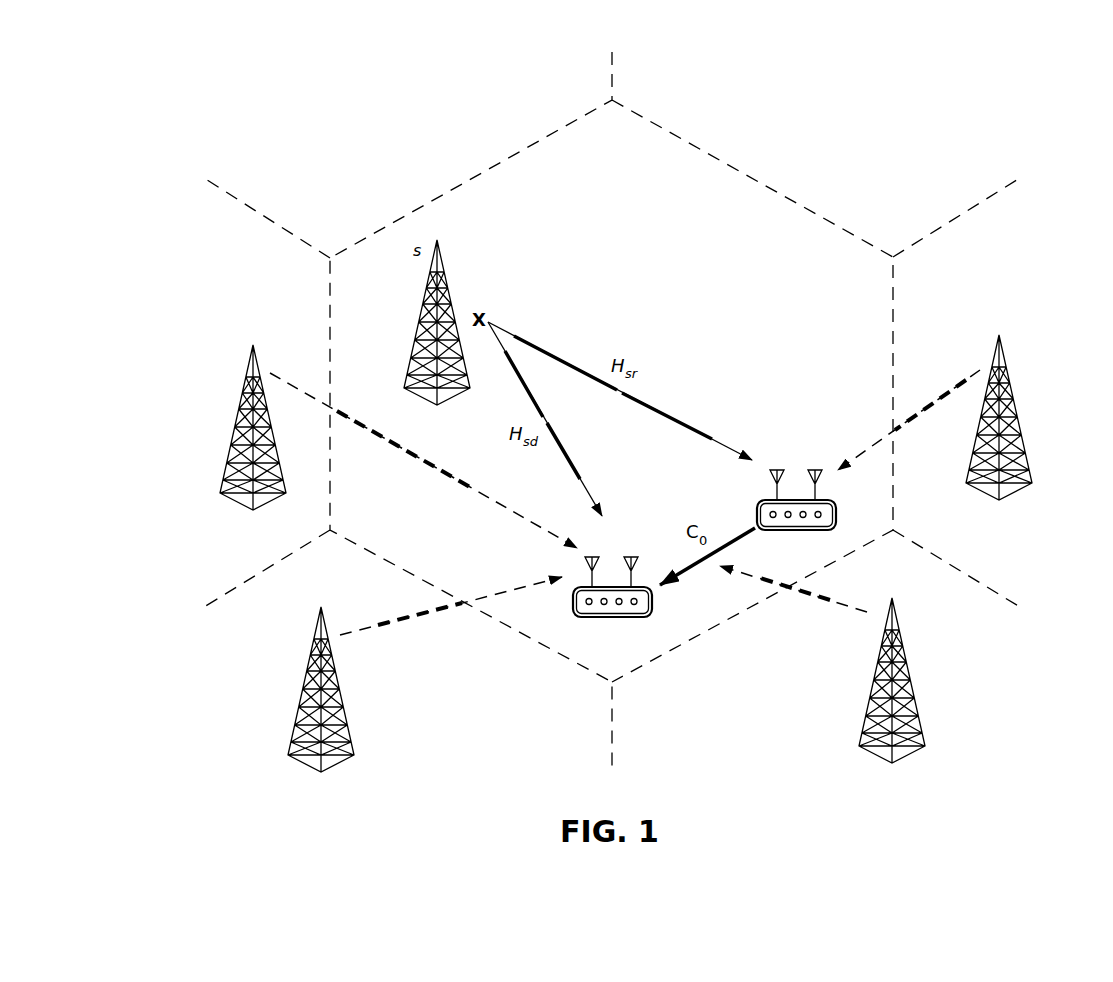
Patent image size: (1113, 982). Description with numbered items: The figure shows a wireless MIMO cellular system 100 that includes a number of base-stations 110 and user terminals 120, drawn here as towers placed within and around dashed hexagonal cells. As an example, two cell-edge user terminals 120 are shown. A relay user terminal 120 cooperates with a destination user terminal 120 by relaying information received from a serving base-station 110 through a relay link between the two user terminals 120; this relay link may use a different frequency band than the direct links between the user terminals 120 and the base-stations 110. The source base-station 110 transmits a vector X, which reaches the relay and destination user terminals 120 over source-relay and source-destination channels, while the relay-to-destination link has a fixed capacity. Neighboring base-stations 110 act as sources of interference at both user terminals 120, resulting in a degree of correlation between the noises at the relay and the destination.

The wireless MIMO cellular system 100 is at (300, 152).
The base-station 110 is at (420, 323).
The user terminal 120 is at (757, 511).